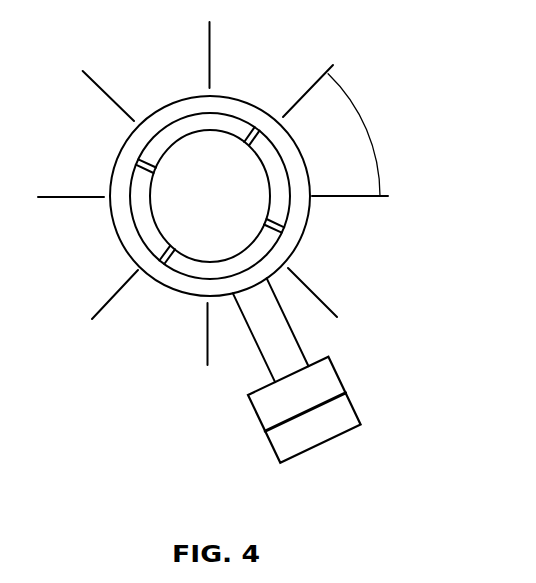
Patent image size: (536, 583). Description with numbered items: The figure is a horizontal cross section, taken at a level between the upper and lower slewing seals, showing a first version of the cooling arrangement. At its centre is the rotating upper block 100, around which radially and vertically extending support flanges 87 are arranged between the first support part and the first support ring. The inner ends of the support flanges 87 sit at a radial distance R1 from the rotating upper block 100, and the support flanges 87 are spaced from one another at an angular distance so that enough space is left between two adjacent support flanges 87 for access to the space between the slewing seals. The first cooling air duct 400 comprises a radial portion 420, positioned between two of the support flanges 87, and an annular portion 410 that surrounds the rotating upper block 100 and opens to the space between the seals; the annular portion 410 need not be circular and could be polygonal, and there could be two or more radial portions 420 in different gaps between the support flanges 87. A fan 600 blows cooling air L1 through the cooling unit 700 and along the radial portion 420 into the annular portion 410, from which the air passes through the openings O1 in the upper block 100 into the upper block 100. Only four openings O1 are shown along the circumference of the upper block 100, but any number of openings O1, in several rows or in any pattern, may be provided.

The support flange 87 is at (312, 85).
The rotating upper block 100 is at (186, 133).
The first cooling air duct 400 is at (277, 298).
The annular portion 410 is at (118, 233).
The radial portion 420 is at (261, 354).
The fan 600 is at (350, 410).
The cooling unit 700 is at (330, 375).
The opening O1 is at (266, 223).
The radius R1 is at (340, 145).
The cooling air L1 is at (247, 277).